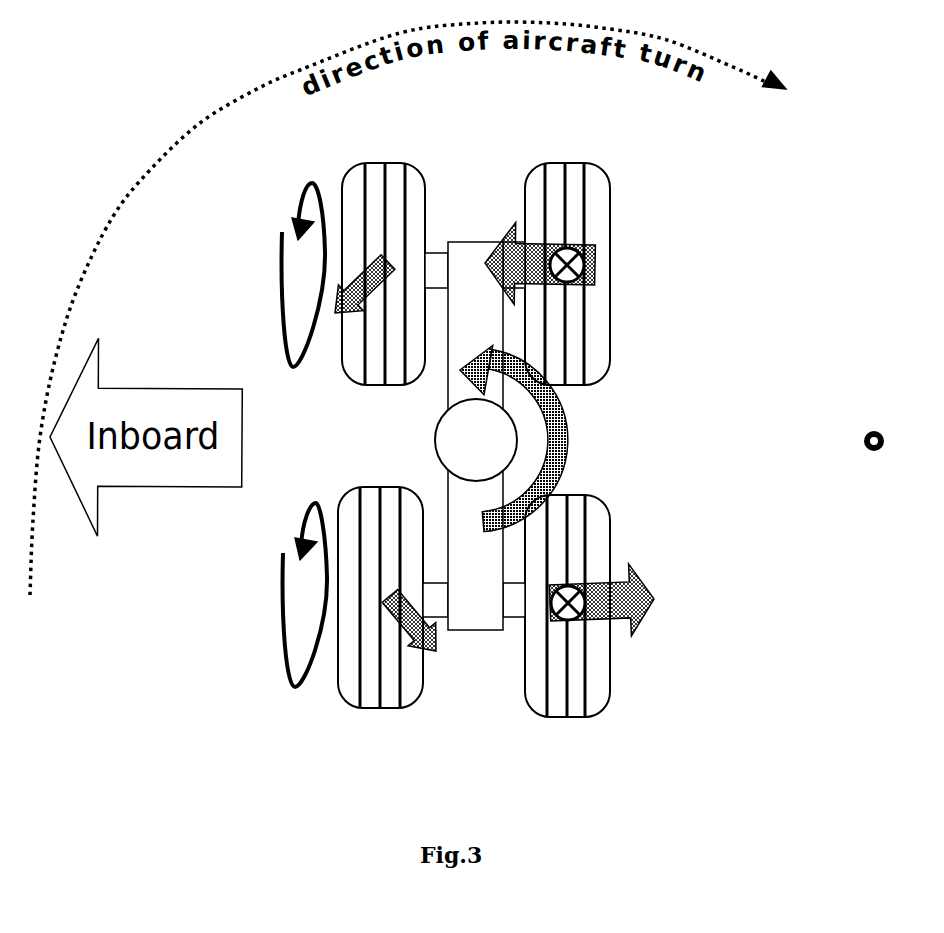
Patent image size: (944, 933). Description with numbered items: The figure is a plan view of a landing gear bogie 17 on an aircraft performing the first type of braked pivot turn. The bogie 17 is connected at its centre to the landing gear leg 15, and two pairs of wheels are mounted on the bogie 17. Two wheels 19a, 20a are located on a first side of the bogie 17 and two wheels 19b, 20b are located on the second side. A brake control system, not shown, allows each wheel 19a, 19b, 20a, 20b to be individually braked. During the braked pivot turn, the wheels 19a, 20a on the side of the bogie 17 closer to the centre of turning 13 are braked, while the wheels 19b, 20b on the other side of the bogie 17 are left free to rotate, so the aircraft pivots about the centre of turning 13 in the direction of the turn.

The centre of turning 13 is at (877, 455).
The leg 15 is at (487, 445).
The bogie 17 is at (473, 273).
The wheel 19a is at (626, 306).
The wheel 19b is at (342, 245).
The wheel 20a is at (611, 658).
The wheel 20b is at (340, 633).